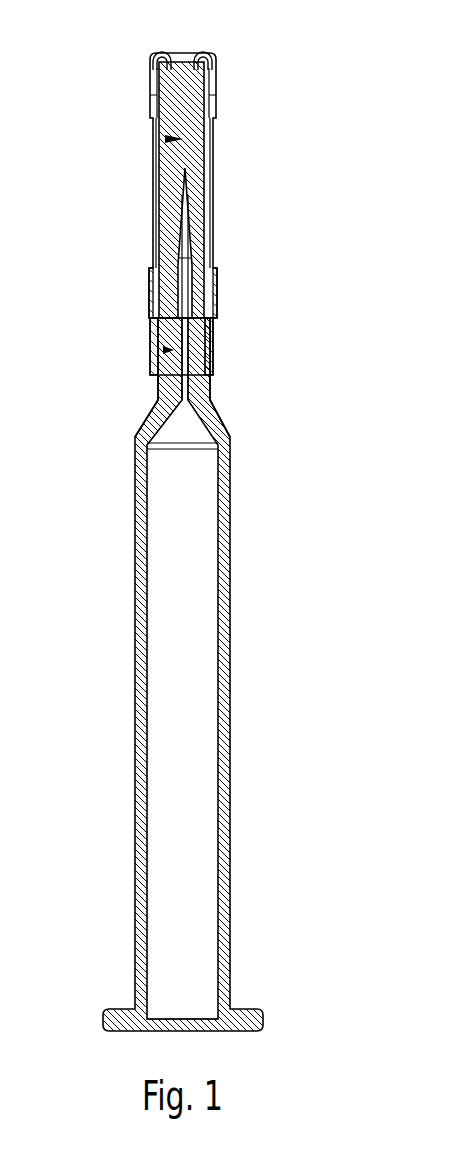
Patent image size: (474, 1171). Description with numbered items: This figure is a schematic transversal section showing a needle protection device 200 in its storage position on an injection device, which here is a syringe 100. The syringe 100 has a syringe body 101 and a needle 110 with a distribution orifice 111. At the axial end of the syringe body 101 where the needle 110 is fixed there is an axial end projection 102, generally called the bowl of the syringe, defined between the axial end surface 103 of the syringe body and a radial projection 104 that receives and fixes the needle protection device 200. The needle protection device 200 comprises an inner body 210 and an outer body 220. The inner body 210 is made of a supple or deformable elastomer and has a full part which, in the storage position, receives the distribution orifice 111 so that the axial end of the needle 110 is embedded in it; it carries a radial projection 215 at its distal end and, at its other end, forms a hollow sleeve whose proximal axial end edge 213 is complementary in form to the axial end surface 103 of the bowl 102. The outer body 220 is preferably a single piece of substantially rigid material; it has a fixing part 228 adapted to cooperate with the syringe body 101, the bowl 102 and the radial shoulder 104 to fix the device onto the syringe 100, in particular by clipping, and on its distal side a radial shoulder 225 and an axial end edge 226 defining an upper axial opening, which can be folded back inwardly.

The syringe 100 is at (179, 674).
The syringe body 101 is at (138, 682).
The axial end projection 102 is at (157, 332).
The axial end surface 103 is at (210, 370).
The radial projection 104 is at (155, 388).
The needle 110 is at (212, 262).
The distribution orifice 111 is at (203, 168).
The needle protection device 200 is at (179, 223).
The inner body 210 is at (165, 139).
The proximal axial end edge 213 is at (155, 298).
The radial projection 215 is at (207, 70).
The outer body 220 is at (152, 270).
The radial shoulder 225 is at (152, 107).
The axial end edge 226 is at (159, 53).
The fixing part 228 is at (212, 380).